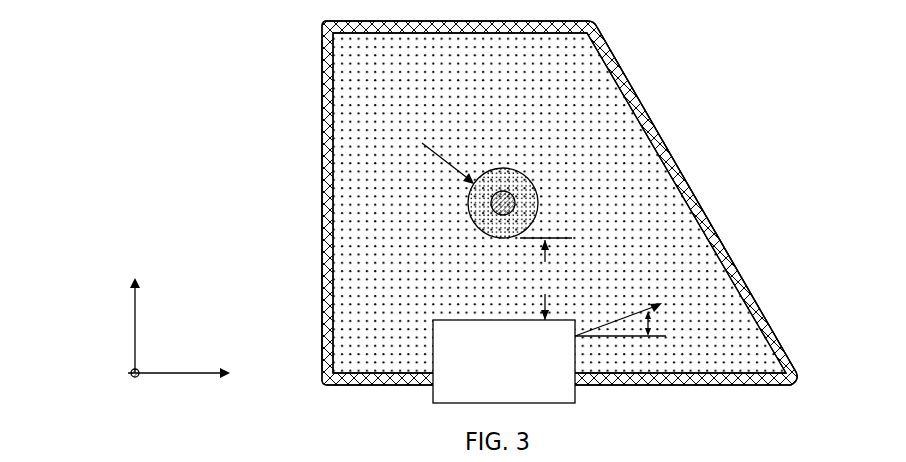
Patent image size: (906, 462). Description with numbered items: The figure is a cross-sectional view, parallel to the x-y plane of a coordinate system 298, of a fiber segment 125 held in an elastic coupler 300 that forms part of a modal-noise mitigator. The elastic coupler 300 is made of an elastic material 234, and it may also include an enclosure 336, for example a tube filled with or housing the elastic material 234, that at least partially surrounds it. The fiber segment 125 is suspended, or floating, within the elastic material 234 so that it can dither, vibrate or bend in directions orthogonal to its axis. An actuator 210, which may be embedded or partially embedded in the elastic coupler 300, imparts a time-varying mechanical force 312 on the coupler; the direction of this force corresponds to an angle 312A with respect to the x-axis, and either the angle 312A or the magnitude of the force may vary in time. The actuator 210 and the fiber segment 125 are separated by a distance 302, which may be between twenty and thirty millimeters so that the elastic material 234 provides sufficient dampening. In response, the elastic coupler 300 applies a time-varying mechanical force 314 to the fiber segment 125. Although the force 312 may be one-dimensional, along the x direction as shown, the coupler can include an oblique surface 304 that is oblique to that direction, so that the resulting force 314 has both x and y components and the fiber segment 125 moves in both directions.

The elastic coupler 300 is at (280, 48).
The elastic material 234 is at (510, 58).
The enclosure 336 is at (323, 154).
The oblique surface 304 is at (688, 152).
The fiber segment 125 is at (538, 200).
The time-varying mechanical force 314 is at (452, 163).
The distance 302 is at (546, 279).
The actuator 210 is at (560, 374).
The time-varying mechanical force 312 is at (590, 330).
The angle 312A is at (655, 328).
The coordinate system 298 is at (90, 258).